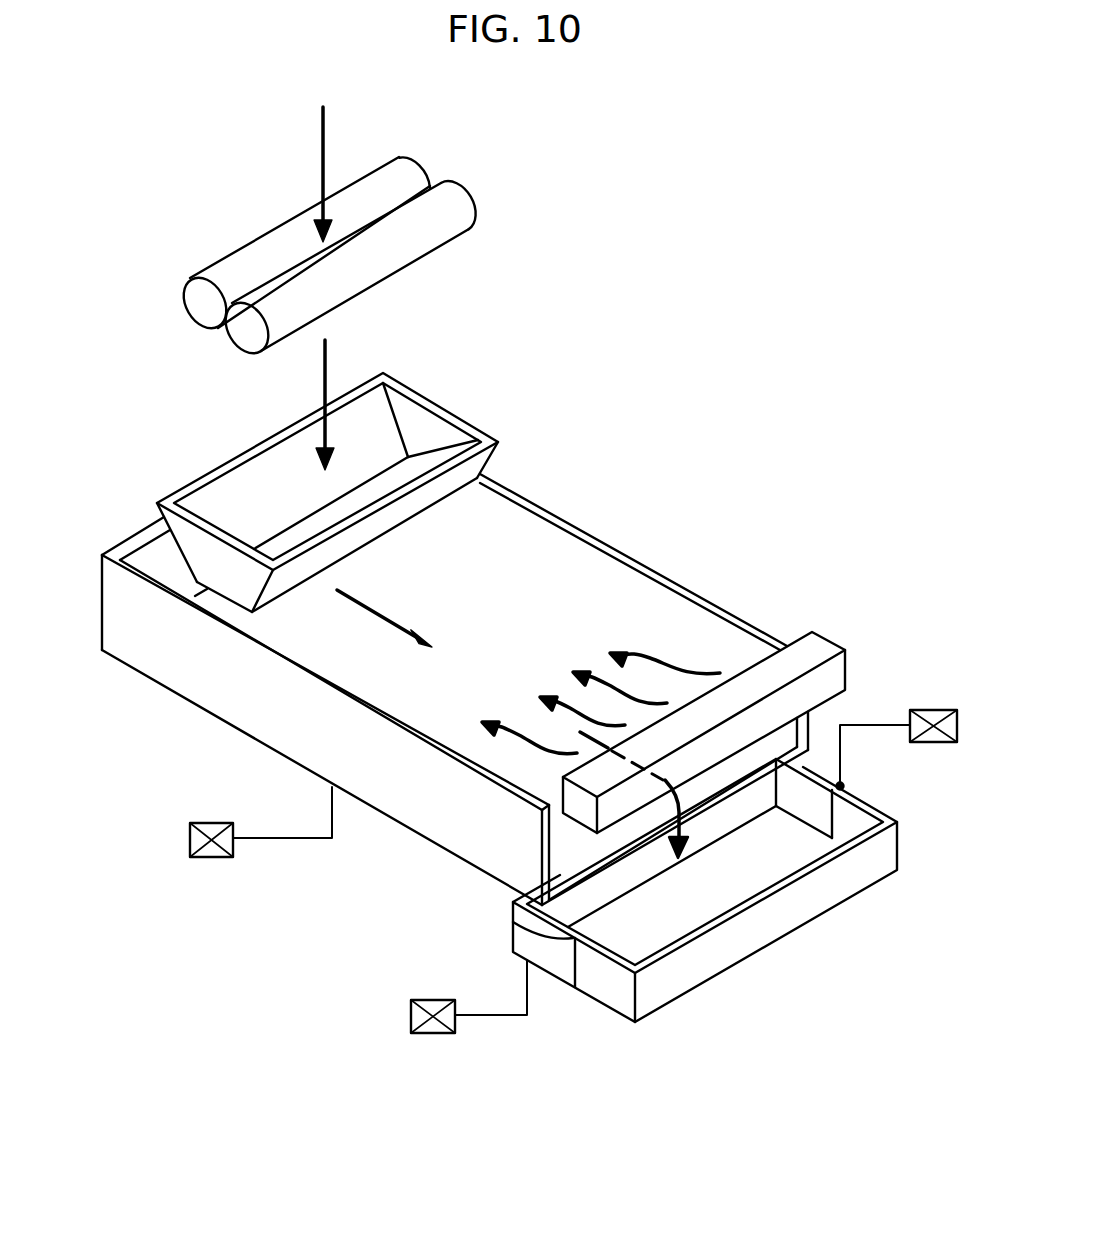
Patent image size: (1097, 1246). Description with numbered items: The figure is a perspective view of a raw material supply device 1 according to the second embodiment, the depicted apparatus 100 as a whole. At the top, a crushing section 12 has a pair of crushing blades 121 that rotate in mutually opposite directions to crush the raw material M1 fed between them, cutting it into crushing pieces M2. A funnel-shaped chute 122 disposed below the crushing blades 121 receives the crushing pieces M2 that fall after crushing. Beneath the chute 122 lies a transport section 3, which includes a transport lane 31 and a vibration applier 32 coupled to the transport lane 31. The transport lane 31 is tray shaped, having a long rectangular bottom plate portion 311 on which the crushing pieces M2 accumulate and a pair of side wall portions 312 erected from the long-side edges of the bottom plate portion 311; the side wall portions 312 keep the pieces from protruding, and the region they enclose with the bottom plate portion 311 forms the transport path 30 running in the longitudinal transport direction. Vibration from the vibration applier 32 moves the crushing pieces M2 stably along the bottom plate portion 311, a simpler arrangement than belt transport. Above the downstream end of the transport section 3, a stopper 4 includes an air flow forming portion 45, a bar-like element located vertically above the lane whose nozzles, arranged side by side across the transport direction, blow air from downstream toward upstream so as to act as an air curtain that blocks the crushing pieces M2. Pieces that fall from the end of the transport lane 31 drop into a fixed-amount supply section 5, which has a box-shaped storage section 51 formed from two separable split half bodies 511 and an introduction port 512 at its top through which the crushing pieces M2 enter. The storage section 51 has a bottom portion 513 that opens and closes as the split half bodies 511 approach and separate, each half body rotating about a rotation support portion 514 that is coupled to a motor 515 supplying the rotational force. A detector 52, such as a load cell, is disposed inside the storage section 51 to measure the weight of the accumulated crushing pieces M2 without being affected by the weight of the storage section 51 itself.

The powder supply apparatus 100 is at (762, 255).
The raw material supply device 1 is at (525, 352).
The crushing section 12 is at (299, 244).
The crushing blades 121 is at (447, 213).
The chute 122 is at (217, 500).
The transport section 3 is at (434, 690).
The transport lane 31 is at (434, 705).
The bottom plate portion 311 is at (478, 706).
The side wall portions 312 is at (638, 592).
The transport path 30 is at (430, 683).
The vibration applier 32 is at (212, 823).
The stopper 4 is at (734, 717).
The air flow forming portion 45 is at (822, 648).
The fixed-amount supply section 5 is at (691, 866).
The storage section 51 is at (703, 924).
The split half bodies 511 is at (547, 957).
The introduction port 512 is at (805, 855).
The bottom portion 513 is at (698, 923).
The rotation support portion 514 is at (852, 784).
The motor 515 is at (935, 710).
The detector 52 is at (432, 1000).
The raw material M1 is at (322, 152).
The crushing piece M2 is at (325, 352).